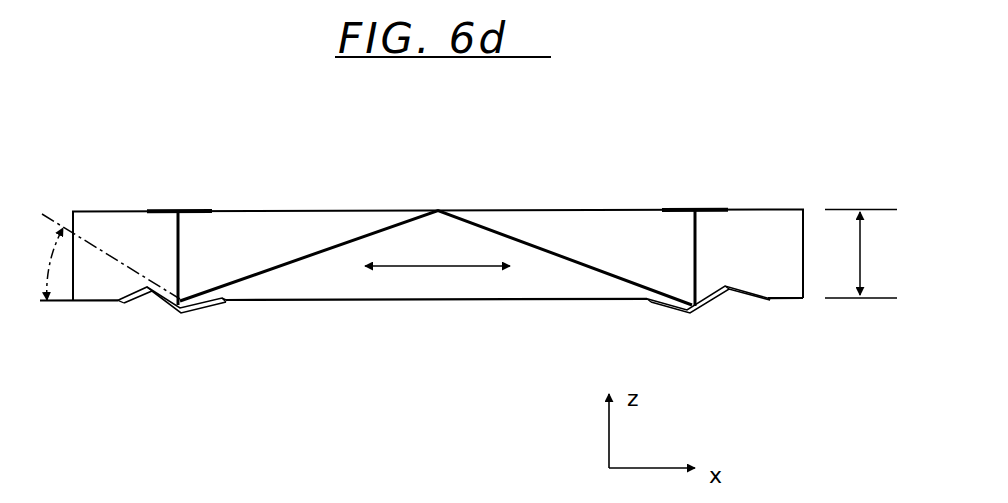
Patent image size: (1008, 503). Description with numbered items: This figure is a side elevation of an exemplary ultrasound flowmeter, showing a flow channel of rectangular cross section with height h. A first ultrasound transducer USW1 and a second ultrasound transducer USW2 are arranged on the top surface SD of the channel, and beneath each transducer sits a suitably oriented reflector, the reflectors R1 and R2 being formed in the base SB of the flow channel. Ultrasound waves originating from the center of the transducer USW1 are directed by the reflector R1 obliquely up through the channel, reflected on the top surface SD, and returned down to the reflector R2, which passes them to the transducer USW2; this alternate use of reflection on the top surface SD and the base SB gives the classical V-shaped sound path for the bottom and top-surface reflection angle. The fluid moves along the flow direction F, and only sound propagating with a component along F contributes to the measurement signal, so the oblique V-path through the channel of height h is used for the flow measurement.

The ultrasound transducer USW1 is at (197, 210).
The second ultrasound transducer USW2 is at (752, 163).
The top surface SD is at (393, 210).
The base SB is at (522, 300).
The reflector R1 is at (148, 305).
The reflector R2 is at (720, 300).
The height h is at (861, 254).
The flow direction F is at (444, 230).